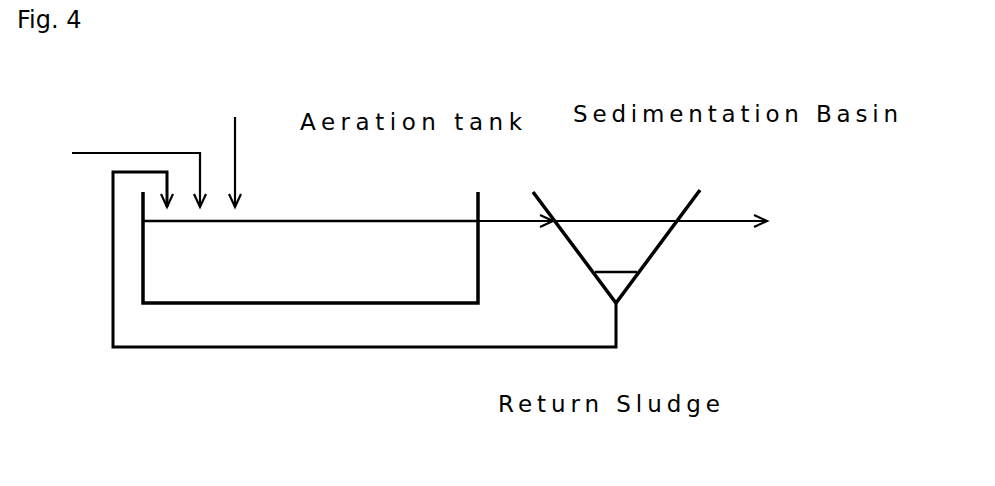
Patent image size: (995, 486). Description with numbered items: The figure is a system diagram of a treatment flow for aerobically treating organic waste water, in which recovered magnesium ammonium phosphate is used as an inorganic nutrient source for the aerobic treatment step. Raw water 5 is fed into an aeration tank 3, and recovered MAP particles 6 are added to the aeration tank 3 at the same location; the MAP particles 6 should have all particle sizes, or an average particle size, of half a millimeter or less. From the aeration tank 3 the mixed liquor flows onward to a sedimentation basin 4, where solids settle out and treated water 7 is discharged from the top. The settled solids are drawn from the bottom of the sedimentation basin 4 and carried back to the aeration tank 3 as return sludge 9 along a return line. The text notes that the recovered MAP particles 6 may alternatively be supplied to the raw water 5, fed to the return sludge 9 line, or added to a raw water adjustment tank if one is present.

The aeration tank 3 is at (412, 219).
The sedimentation basin 4 is at (677, 218).
The raw water 5 is at (127, 174).
The MAP particles 6 is at (234, 150).
The treated water 7 is at (632, 220).
The return sludge 9 is at (498, 348).